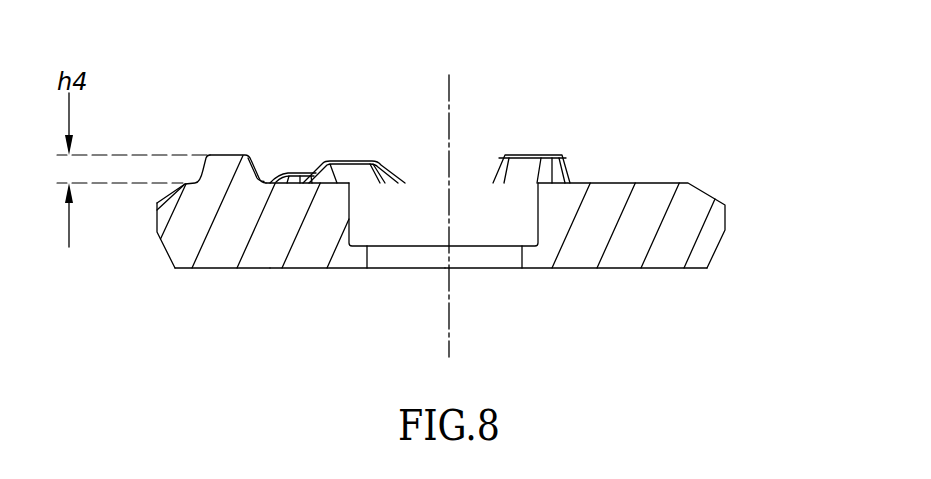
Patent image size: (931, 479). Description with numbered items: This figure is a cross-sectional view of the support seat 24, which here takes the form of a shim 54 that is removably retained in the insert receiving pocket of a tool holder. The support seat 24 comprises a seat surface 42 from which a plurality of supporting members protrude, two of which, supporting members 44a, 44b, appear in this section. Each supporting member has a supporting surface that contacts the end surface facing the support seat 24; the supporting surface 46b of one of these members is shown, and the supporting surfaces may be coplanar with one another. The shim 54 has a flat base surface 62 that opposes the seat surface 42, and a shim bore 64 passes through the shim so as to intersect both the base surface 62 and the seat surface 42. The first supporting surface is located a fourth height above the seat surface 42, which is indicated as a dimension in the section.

The seat surface 42 is at (657, 164).
The supporting surface 46b is at (226, 155).
The supporting member 44a is at (271, 156).
The supporting member 44b is at (583, 158).
The shim bore 64 is at (421, 252).
The base surface 62 is at (621, 289).
The support seat 24 is at (209, 302).
The shim 54 is at (228, 333).